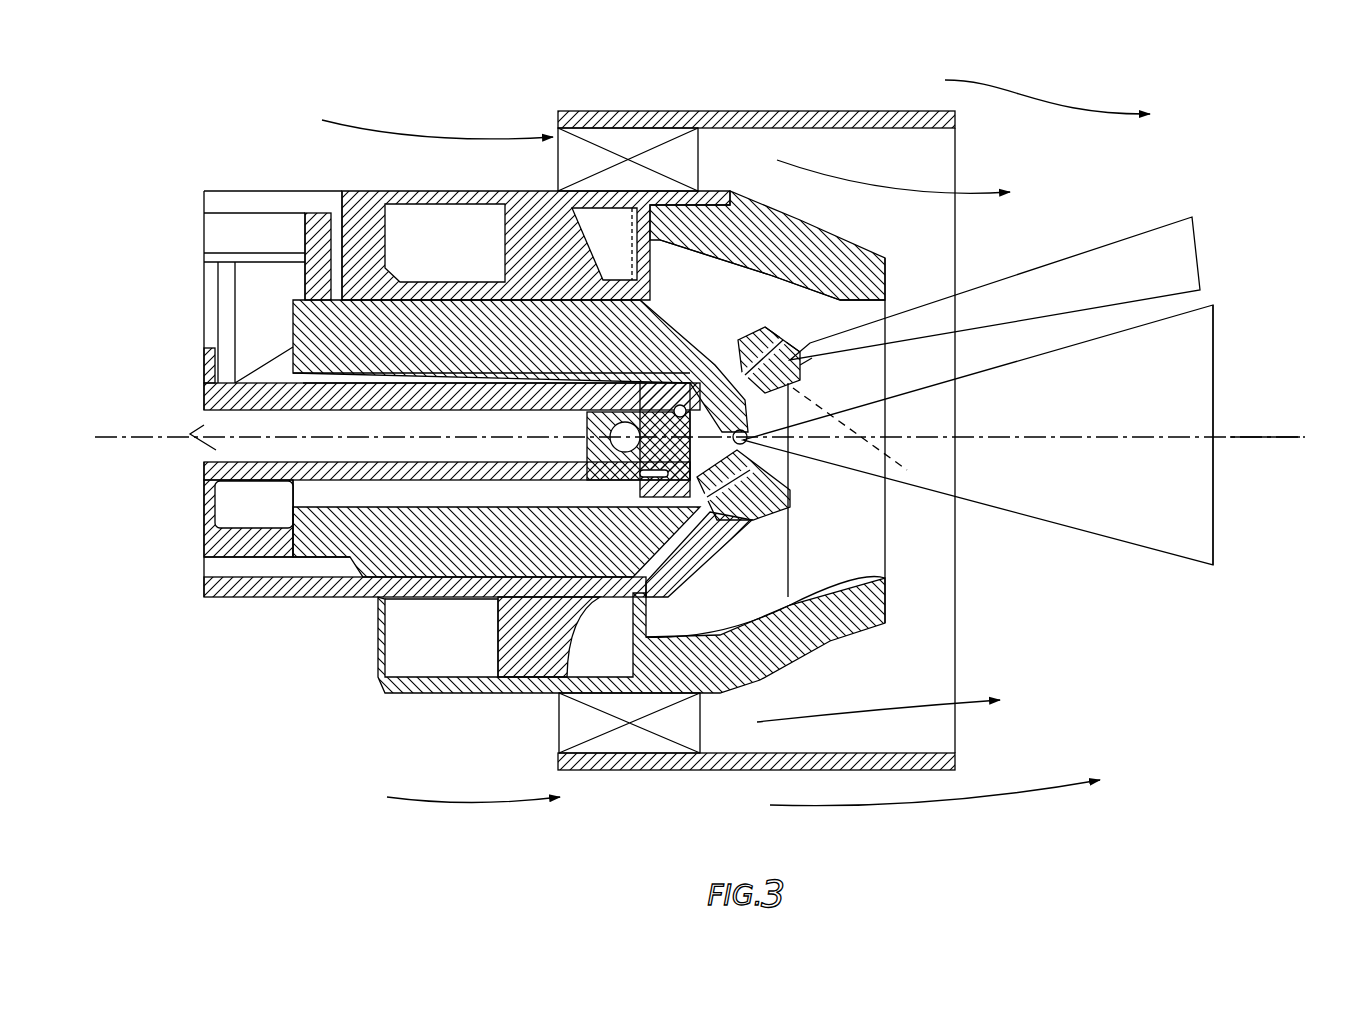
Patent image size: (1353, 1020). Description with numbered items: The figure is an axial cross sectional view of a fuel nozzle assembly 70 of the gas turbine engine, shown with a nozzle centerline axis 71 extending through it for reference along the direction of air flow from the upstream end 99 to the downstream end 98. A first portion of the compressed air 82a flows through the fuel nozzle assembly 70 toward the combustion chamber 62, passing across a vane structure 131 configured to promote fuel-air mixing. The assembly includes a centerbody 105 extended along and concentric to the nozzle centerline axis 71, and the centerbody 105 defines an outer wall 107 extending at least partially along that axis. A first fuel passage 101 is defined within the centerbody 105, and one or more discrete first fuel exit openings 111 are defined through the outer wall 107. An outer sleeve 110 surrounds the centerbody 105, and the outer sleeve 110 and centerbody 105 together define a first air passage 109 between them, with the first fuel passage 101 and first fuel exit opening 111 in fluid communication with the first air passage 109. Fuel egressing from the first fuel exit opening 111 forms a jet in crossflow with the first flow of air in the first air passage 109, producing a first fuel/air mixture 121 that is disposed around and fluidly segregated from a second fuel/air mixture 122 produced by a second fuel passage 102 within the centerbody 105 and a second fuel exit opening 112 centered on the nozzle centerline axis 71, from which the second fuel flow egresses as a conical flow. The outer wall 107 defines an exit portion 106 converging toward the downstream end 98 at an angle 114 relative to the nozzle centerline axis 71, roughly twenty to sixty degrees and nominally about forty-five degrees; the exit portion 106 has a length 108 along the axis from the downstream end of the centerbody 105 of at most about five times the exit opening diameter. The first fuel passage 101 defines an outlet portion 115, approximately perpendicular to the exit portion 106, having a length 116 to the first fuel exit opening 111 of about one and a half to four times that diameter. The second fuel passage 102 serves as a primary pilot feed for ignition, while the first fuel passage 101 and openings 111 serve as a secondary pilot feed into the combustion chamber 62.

The fuel nozzle assembly 70 is at (473, 83).
The first portion of compressed air 82a is at (397, 132).
The vane structure 131 is at (560, 161).
The first fuel passage 101 is at (688, 200).
The outer wall 107 is at (757, 332).
The first air passage 109 is at (711, 289).
The outer sleeve 110 is at (880, 257).
The first fuel exit opening 111 is at (793, 348).
The exit portion 106 is at (805, 343).
The length 108 is at (880, 318).
The centerbody 105 is at (800, 360).
The length 116 is at (822, 398).
The angle 114 is at (840, 424).
The second fuel exit opening 112 is at (772, 478).
The second fuel passage 102 is at (700, 450).
The outlet portion 115 is at (618, 478).
The first fuel/air mixture 121 is at (1029, 301).
The second fuel/air mixture 122 is at (1041, 408).
The combustion chamber 62 is at (1263, 351).
The nozzle centerline axis 71 is at (1263, 437).
The upstream end 99 is at (66, 449).
The downstream end 98 is at (1310, 449).